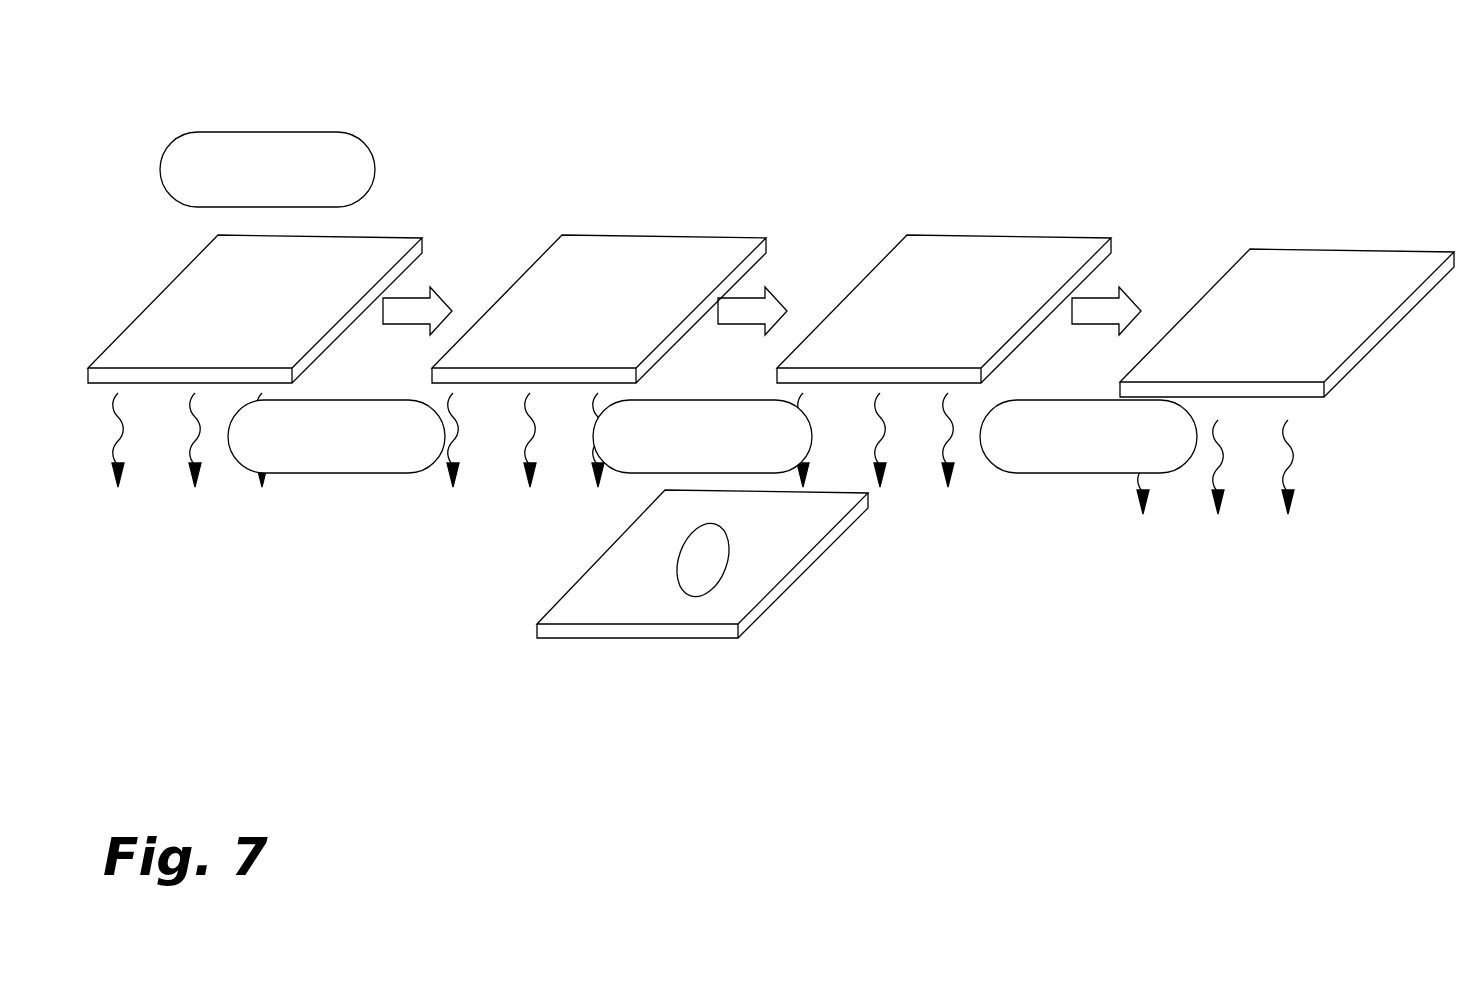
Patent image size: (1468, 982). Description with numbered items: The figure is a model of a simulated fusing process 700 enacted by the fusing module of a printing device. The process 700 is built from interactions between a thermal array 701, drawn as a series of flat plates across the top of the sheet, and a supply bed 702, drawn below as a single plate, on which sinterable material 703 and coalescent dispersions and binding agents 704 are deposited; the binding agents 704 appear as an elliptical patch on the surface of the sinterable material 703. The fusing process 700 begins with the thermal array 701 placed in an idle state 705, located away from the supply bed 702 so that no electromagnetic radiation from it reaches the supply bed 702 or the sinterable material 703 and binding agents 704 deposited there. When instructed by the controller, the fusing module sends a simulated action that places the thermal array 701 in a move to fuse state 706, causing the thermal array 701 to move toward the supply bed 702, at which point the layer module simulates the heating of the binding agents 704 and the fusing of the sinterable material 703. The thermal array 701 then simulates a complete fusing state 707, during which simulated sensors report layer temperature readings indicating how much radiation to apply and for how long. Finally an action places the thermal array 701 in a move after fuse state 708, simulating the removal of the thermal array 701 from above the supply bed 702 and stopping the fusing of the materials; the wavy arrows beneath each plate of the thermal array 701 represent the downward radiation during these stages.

The simulated fusing process 700 is at (229, 104).
The thermal array 701 is at (234, 313).
The supply bed 702 is at (536, 626).
The sinterable material 703 is at (592, 605).
The coalescent dispersions and binding agents 704 is at (697, 569).
The idle state 705 is at (248, 195).
The move to fuse state 706 is at (317, 461).
The fusing state 707 is at (683, 461).
The move after fuse state 708 is at (1069, 461).